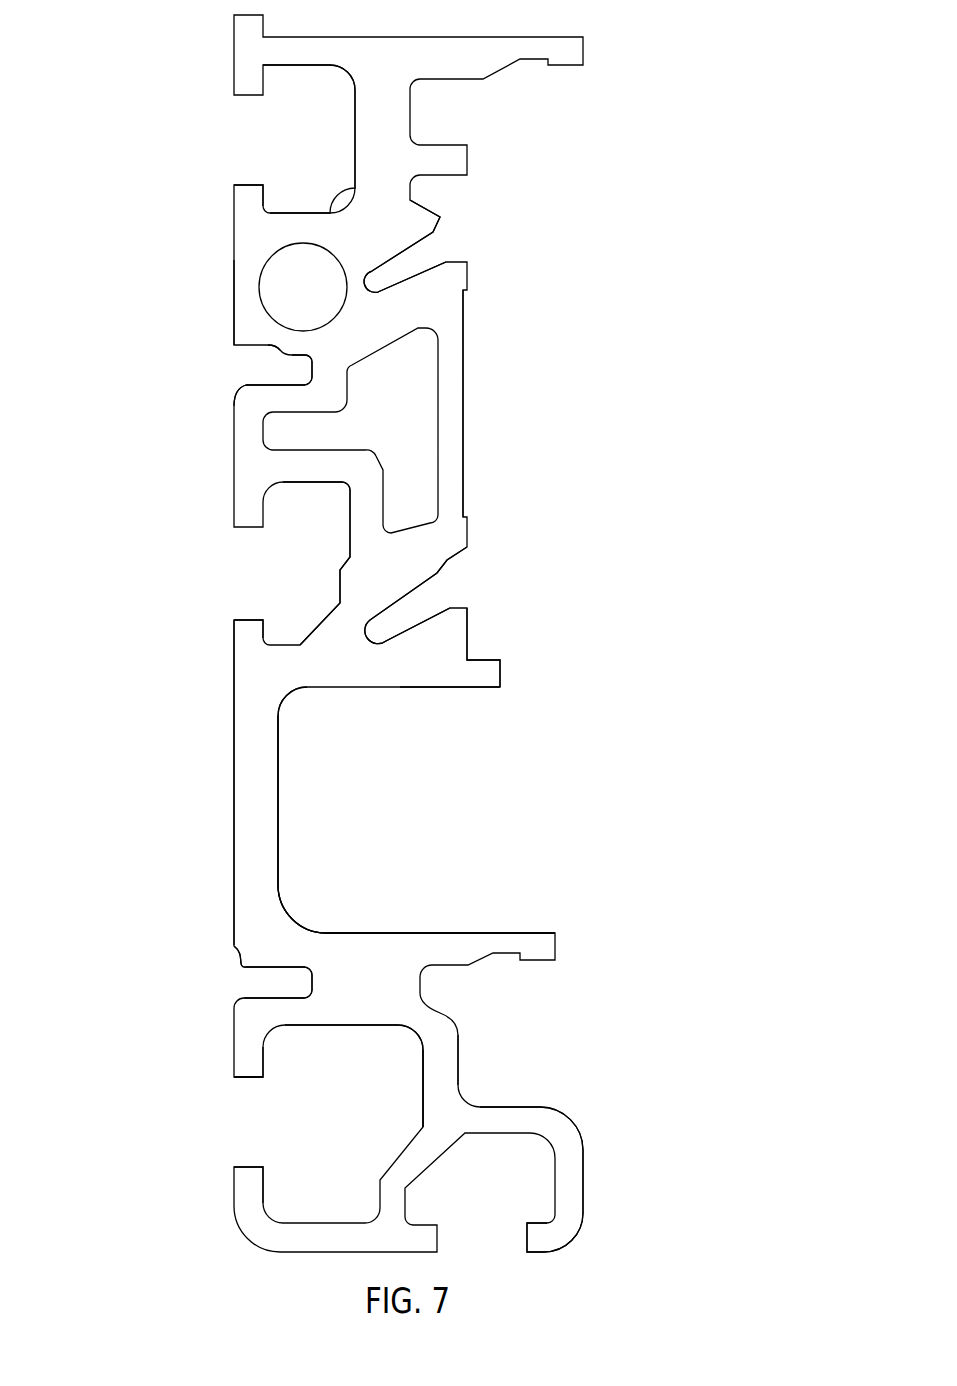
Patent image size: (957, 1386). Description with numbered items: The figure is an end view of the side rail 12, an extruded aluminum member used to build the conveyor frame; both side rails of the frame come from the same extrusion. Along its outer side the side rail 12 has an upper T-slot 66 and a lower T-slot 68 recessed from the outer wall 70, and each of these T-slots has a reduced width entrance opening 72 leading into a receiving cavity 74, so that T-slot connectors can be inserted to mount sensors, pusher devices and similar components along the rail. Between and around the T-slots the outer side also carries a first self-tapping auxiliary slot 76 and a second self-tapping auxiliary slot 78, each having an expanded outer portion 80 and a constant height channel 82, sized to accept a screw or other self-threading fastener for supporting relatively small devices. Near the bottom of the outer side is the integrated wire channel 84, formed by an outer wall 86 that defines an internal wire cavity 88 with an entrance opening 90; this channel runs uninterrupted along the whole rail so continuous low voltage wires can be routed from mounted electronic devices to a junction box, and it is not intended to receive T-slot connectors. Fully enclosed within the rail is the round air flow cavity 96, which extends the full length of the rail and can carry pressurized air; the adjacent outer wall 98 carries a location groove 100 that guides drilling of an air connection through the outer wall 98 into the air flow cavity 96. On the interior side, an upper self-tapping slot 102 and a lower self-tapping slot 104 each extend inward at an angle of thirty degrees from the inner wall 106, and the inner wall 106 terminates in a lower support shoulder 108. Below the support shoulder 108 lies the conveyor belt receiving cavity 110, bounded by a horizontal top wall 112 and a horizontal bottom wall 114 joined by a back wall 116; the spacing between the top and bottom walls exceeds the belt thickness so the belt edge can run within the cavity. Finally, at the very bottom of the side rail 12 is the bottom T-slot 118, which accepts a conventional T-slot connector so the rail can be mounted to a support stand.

The side rail 12 is at (562, 420).
The upper T-slot 66 is at (237, 133).
The lower T-slot 68 is at (225, 570).
The outer wall 70 is at (237, 768).
The reduced width entrance opening 72 is at (237, 183).
The receiving cavity 74 is at (300, 88).
The first self-tapping auxiliary slot 76 is at (237, 372).
The second self-tapping auxiliary slot 78 is at (247, 990).
The expanded outer portion 80 is at (240, 390).
The constant height channel 82 is at (292, 353).
The wire channel 84 is at (250, 1130).
The outer wall 86 is at (450, 1083).
The internal wire cavity 88 is at (393, 1047).
The entrance opening 90 is at (248, 1083).
The air flow cavity 96 is at (290, 290).
The outer wall 98 is at (243, 325).
The location groove 100 is at (233, 285).
The upper self-tapping slot 102 is at (447, 245).
The lower self-tapping slot 104 is at (448, 583).
The inner wall 106 is at (463, 368).
The lower support shoulder 108 is at (485, 657).
The conveyor belt receiving cavity 110 is at (522, 810).
The horizontal top wall 112 is at (395, 672).
The horizontal bottom wall 114 is at (412, 930).
The back wall 116 is at (278, 815).
The bottom T-slot 118 is at (517, 1160).